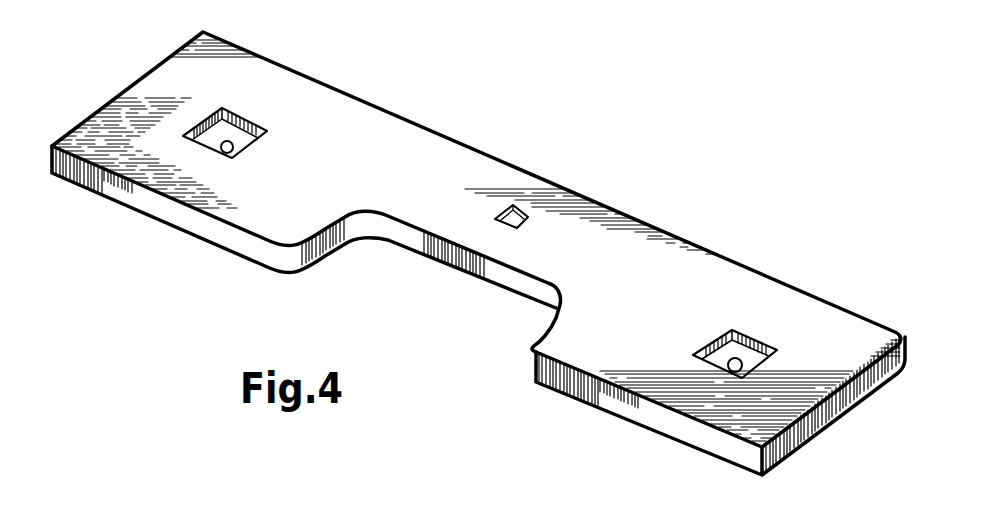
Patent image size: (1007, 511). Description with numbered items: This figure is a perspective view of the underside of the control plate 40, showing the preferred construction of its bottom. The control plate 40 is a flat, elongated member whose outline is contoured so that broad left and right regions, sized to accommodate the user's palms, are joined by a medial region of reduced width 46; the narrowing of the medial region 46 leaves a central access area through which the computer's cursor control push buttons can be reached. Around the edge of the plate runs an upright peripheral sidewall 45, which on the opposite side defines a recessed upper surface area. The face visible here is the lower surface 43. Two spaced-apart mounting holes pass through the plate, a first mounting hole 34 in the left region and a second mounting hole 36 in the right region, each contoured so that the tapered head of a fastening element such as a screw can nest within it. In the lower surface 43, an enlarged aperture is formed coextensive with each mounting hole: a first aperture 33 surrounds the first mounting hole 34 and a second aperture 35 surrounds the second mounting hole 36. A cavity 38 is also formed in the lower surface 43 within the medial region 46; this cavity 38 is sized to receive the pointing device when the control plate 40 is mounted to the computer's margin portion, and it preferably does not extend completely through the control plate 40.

The control plate 40 is at (588, 102).
The lower surface 43 is at (404, 146).
The upright peripheral sidewall 45 is at (257, 247).
The medial region of reduced width 46 is at (473, 222).
The first aperture 33 is at (210, 132).
The first mounting hole 34 is at (227, 145).
The second aperture 35 is at (750, 355).
The second mounting hole 36 is at (735, 362).
The cavity 38 is at (522, 207).